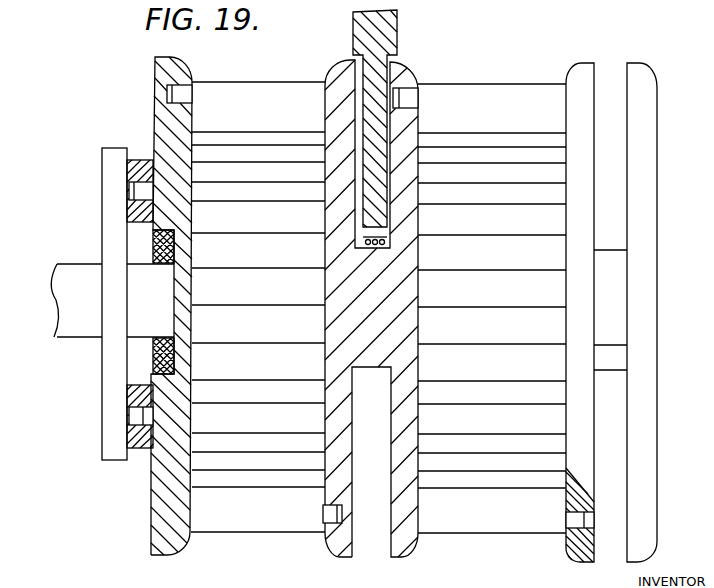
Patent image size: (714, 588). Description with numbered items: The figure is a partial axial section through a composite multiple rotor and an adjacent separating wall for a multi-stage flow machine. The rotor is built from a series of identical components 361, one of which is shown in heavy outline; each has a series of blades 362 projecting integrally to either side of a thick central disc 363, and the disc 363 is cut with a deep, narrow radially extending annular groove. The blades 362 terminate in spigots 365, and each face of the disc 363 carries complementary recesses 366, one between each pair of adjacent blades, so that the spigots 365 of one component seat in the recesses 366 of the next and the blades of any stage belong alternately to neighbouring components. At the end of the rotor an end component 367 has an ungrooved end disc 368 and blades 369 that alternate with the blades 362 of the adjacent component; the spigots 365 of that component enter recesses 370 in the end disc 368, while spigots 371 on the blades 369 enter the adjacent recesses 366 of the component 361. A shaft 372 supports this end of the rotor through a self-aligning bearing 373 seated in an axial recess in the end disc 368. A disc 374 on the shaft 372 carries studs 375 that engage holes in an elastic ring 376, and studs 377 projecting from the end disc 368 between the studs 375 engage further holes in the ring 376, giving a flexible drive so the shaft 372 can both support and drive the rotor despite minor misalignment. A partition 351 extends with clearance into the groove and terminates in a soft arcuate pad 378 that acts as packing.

The partition 351 is at (402, 34).
The component 361 is at (431, 70).
The blade 362 is at (451, 541).
The central disc 363 is at (338, 553).
The spigot 365 is at (172, 80).
The recess 366 is at (590, 523).
The end component 367 is at (193, 546).
The end disc 368 is at (157, 532).
The blade 369 is at (233, 516).
The recess 370 is at (168, 96).
The spigot 371 is at (325, 515).
The shaft 372 is at (80, 256).
The self-aligning bearing 373 is at (153, 347).
The disc 374 is at (107, 448).
The stud 375 is at (130, 417).
The elastic ring 376 is at (142, 158).
The stud 377 is at (130, 190).
The arcuate pad 378 is at (378, 236).